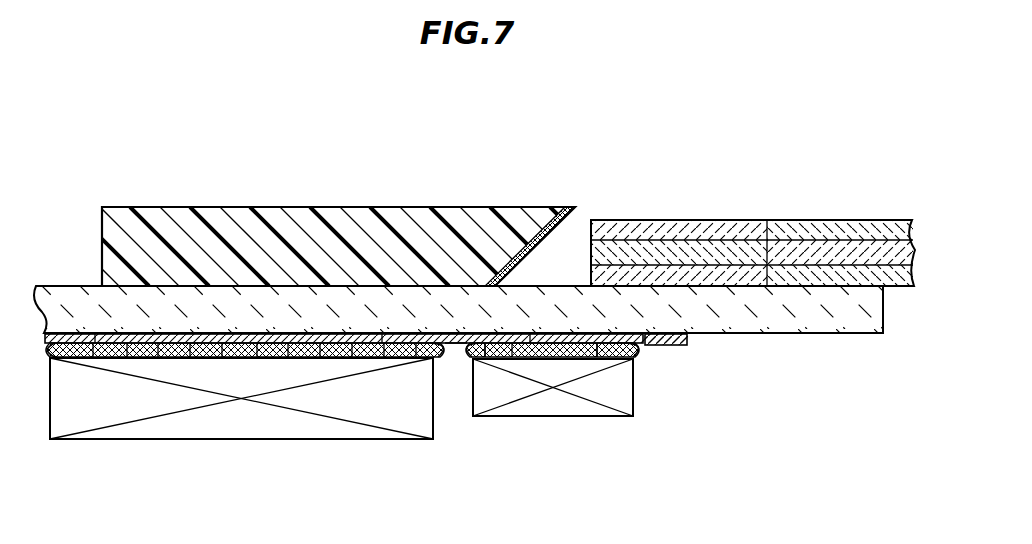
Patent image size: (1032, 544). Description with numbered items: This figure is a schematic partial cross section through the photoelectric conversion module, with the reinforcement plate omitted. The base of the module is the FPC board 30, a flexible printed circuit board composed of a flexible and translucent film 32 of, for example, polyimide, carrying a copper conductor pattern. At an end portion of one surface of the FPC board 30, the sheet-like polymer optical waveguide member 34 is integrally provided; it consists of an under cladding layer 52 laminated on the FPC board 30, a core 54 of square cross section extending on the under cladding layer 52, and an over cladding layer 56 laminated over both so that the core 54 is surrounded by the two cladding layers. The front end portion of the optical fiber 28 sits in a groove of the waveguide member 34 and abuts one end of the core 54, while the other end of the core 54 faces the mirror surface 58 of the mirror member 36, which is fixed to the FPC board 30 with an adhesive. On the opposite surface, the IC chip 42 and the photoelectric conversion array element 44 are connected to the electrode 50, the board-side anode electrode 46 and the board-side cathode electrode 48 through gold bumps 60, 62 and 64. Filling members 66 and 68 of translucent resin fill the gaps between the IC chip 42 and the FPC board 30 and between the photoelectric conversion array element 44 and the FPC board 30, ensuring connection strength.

The optical fiber 28 is at (900, 290).
The FPC board 30 is at (767, 340).
The film 32 is at (824, 336).
The polymer optical waveguide member 34 is at (643, 219).
The mirror member 36 is at (297, 206).
The IC chip 42 is at (297, 440).
The photoelectric conversion array element 44 is at (553, 417).
The board-side anode electrode 46 is at (455, 345).
The board-side cathode electrode 48 is at (596, 357).
The electrode 50 is at (203, 345).
The under cladding layer 52 is at (722, 275).
The core 54 is at (723, 251).
The over cladding layer 56 is at (688, 229).
The mirror surface 58 is at (578, 207).
The bump 60 is at (64, 358).
The bump 62 is at (484, 358).
The bump 64 is at (621, 350).
The filling member 66 is at (174, 358).
The filling member 68 is at (522, 358).